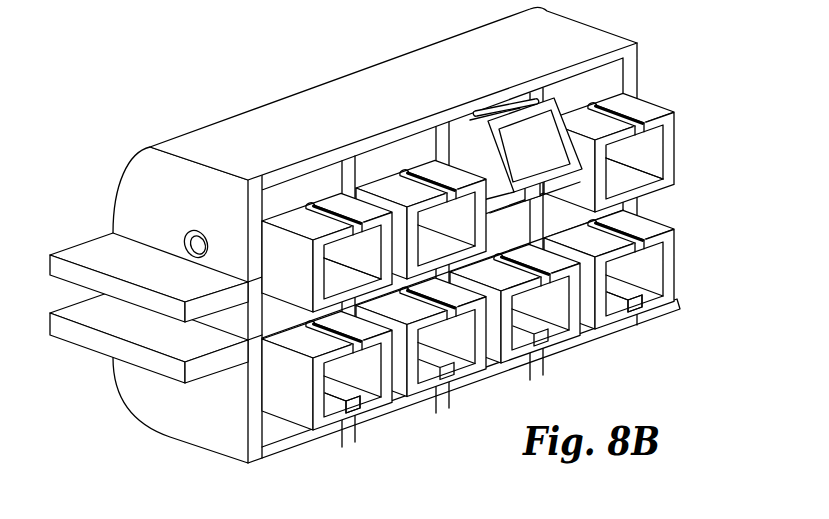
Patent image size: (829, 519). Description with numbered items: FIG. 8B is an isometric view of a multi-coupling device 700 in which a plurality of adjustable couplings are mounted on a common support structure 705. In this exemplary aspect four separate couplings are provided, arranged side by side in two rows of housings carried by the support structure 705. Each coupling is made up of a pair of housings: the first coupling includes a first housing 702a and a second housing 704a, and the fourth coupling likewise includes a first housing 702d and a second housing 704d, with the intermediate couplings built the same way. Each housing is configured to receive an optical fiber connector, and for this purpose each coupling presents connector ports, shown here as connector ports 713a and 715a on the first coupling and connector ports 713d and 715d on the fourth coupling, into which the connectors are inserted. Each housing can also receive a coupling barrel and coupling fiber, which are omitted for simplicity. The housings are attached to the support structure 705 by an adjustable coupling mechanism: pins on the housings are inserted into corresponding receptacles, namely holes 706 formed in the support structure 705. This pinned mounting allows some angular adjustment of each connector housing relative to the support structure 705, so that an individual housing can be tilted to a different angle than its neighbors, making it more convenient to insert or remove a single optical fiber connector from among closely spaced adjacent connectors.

The multi-coupling device 700 is at (365, 241).
The support structure 705 is at (393, 93).
The holes 706 is at (125, 225).
The first housing 702a is at (251, 208).
The first housing 702d is at (636, 143).
The second housing 704a is at (327, 401).
The second housing 704d is at (653, 269).
The connector port 713a is at (402, 352).
The connector port 713d is at (685, 163).
The connector port 715a is at (372, 424).
The connector port 715d is at (662, 316).